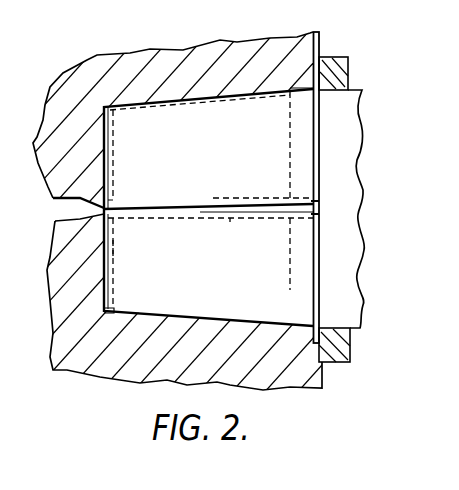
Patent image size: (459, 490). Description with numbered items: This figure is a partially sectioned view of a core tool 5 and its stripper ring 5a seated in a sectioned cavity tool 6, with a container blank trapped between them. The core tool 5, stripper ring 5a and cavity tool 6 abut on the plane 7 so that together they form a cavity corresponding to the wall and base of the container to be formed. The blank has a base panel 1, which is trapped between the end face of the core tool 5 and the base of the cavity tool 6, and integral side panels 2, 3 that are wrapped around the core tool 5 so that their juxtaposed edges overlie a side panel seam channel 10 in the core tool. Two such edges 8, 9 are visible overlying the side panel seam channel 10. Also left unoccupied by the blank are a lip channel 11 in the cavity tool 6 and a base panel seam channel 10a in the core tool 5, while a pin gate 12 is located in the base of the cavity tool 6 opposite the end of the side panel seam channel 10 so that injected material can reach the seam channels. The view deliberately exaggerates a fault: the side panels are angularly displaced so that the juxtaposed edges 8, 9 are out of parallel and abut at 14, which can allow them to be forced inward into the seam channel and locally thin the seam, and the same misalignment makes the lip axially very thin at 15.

The base panel 1 is at (100, 225).
The side panel 2 is at (205, 159).
The side panel 3 is at (205, 301).
The core tool 5 is at (347, 267).
The stripper ring 5a is at (337, 343).
The cavity tool 6 is at (202, 60).
The plane 7 is at (320, 45).
The edge 8 is at (279, 214).
The edge 9 is at (253, 206).
The side panel seam channel 10 is at (230, 219).
The base panel seam channel 10a is at (115, 250).
The lip channel 11 is at (293, 89).
The pin gate 12 is at (53, 212).
The abutment point 14 is at (114, 205).
The thin lip region 15 is at (319, 205).